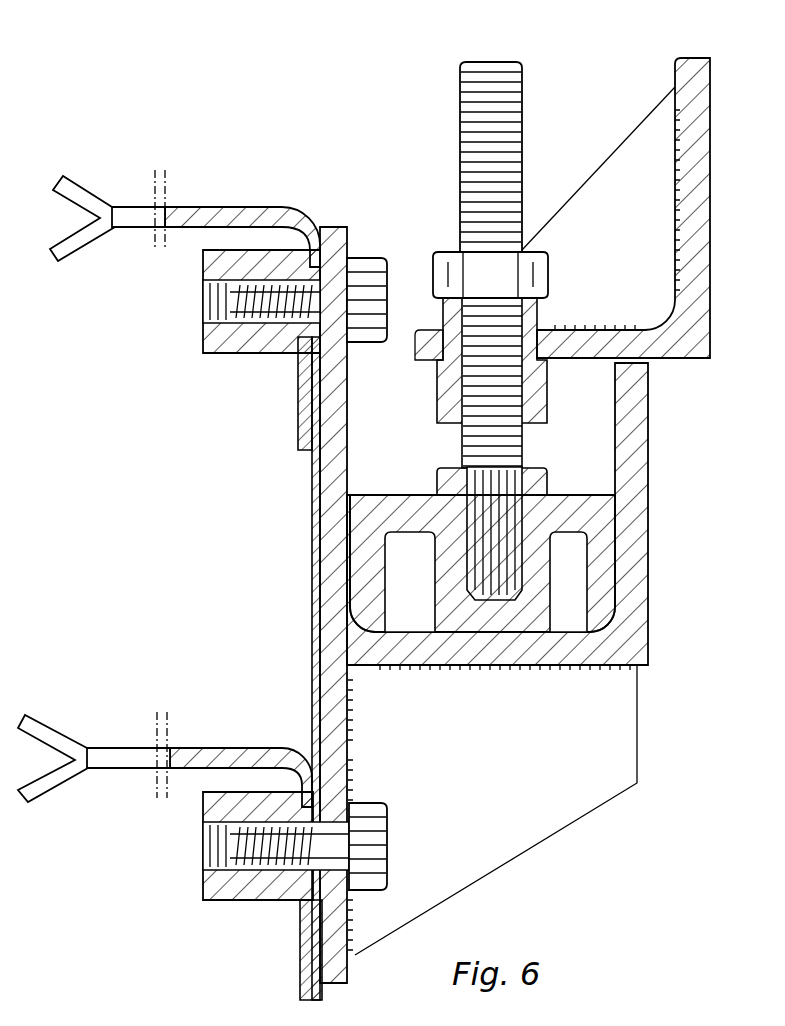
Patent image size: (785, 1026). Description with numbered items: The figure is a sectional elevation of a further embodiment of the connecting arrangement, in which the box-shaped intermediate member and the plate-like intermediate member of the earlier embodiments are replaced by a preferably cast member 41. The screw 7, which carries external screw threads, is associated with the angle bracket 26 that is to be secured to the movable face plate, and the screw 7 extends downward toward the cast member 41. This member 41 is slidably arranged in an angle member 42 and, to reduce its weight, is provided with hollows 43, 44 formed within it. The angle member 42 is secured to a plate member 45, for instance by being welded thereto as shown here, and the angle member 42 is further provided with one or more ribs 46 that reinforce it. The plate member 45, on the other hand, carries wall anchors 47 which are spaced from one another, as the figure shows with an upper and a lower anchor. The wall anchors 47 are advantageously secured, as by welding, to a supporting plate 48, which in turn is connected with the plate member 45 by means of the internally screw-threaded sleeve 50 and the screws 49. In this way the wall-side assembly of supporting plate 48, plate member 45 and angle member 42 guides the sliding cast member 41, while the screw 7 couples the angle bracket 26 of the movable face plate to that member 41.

The screw 7 is at (458, 162).
The angle bracket 26 is at (676, 82).
The cast member 41 is at (590, 510).
The angle member 42 is at (640, 582).
The hollow 43 is at (397, 540).
The hollow 44 is at (565, 540).
The plate member 45 is at (331, 232).
The rib 46 is at (524, 820).
The wall anchor 47 is at (139, 212).
The supporting plate 48 is at (318, 590).
The screw 49 is at (366, 270).
The internally screw-threaded sleeve 50 is at (214, 342).